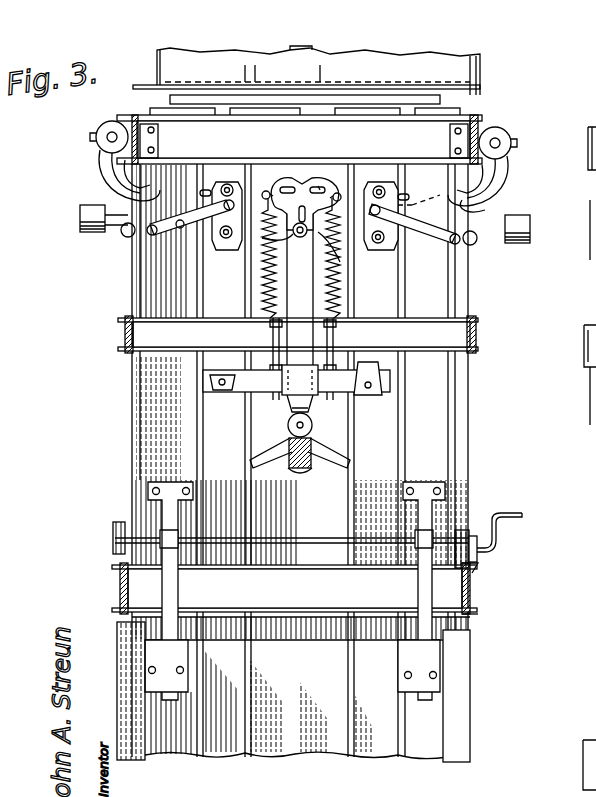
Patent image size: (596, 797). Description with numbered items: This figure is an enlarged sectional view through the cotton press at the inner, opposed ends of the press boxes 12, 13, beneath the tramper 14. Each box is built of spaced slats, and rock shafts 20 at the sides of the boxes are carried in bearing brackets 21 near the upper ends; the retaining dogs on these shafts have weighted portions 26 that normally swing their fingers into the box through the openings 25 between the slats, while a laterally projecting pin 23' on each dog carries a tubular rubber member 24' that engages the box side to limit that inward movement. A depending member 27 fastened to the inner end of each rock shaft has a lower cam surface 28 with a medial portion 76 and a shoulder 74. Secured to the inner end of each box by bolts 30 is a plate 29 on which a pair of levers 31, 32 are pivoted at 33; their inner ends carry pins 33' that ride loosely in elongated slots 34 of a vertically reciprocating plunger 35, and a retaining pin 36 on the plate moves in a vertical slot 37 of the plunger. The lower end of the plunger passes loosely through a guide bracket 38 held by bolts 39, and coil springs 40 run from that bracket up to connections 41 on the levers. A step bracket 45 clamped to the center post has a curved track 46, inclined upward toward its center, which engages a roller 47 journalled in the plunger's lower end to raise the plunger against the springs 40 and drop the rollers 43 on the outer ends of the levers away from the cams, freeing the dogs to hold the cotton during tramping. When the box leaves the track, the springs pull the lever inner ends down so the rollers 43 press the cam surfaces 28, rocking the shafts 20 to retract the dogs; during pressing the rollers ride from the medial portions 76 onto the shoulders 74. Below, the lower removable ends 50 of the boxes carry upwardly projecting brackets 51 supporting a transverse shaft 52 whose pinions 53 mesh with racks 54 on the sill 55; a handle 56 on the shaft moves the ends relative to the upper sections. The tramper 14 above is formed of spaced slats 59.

The press box 12 is at (157, 418).
The press box 13 is at (595, 412).
The tramper 14 is at (440, 70).
The rock shaft 20 is at (574, 144).
The bearing bracket 21 is at (595, 222).
The laterally projecting pin 23' is at (97, 235).
The tubular rubber member 24' is at (307, 244).
The opening 25 is at (505, 209).
The weighted portion 26 is at (80, 221).
The depending member 27 is at (108, 168).
The cam surface 28 is at (208, 198).
The plate 29 is at (240, 243).
The bolt 30 is at (366, 246).
The lever 31 is at (210, 228).
The lever 32 is at (410, 237).
The pivot 33 is at (419, 189).
The laterally projecting pin 33' is at (336, 167).
The elongated slot 34 is at (282, 180).
The plunger 35 is at (330, 302).
The retaining pin 36 is at (293, 230).
The vertical slot 37 is at (322, 188).
The guide bracket 38 is at (240, 386).
The bolt 39 is at (366, 394).
The coil spring 40 is at (262, 280).
The spring connection 41 is at (266, 190).
The roller 43 is at (128, 238).
The step bracket 45 is at (290, 470).
The curved track 46 is at (338, 453).
The roller 47 is at (306, 424).
The lower removable end 50 is at (455, 710).
The bracket 51 is at (150, 678).
The transverse shaft 52 is at (306, 536).
The pinion 53 is at (466, 528).
The rack 54 is at (478, 571).
The sill 55 is at (478, 598).
The handle 56 is at (500, 510).
The slat 59 is at (441, 99).
The shoulder 74 is at (160, 183).
The medial portion 76 is at (495, 190).